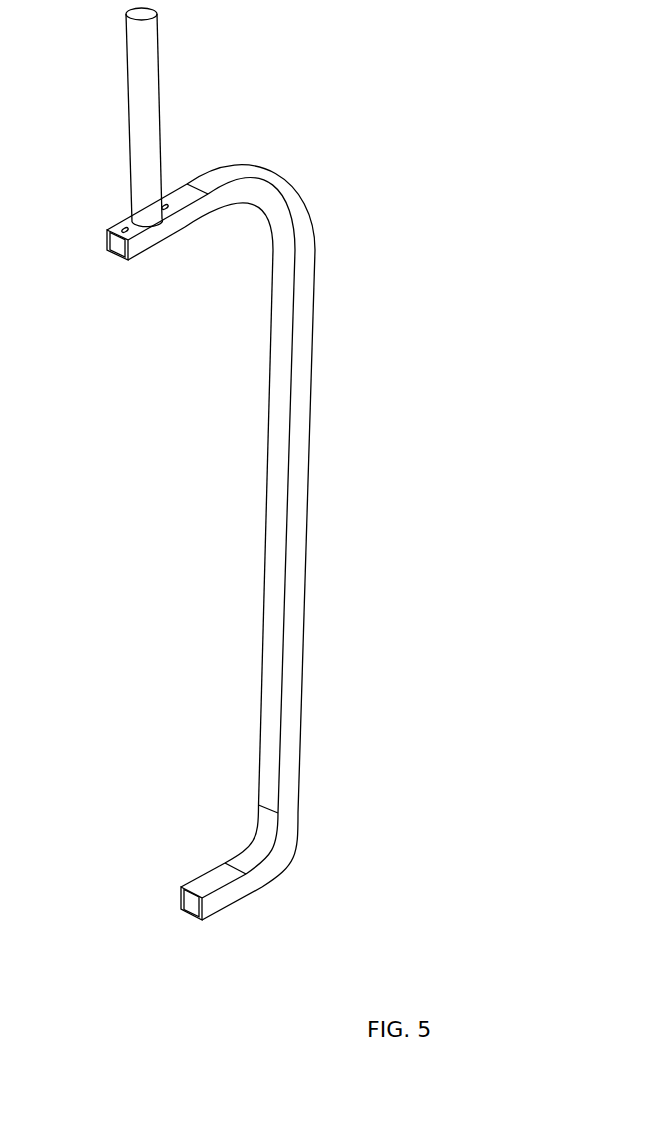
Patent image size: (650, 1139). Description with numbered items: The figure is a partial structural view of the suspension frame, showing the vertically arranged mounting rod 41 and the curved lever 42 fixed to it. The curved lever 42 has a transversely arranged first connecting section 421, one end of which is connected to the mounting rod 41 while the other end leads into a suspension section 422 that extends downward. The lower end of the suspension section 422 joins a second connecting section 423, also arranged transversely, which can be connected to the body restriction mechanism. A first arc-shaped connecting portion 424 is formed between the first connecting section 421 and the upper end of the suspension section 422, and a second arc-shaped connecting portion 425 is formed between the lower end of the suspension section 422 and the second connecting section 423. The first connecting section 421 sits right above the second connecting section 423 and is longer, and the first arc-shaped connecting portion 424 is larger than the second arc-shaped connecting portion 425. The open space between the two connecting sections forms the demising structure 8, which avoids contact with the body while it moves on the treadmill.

The demising structure 8 is at (245, 435).
The mounting rod 41 is at (143, 124).
The curved lever 42 is at (330, 562).
The first connecting section 421 is at (192, 212).
The suspension section 422 is at (280, 500).
The second connecting section 423 is at (220, 878).
The first arc-shaped connecting portion 424 is at (276, 192).
The second arc-shaped connecting portion 425 is at (272, 850).